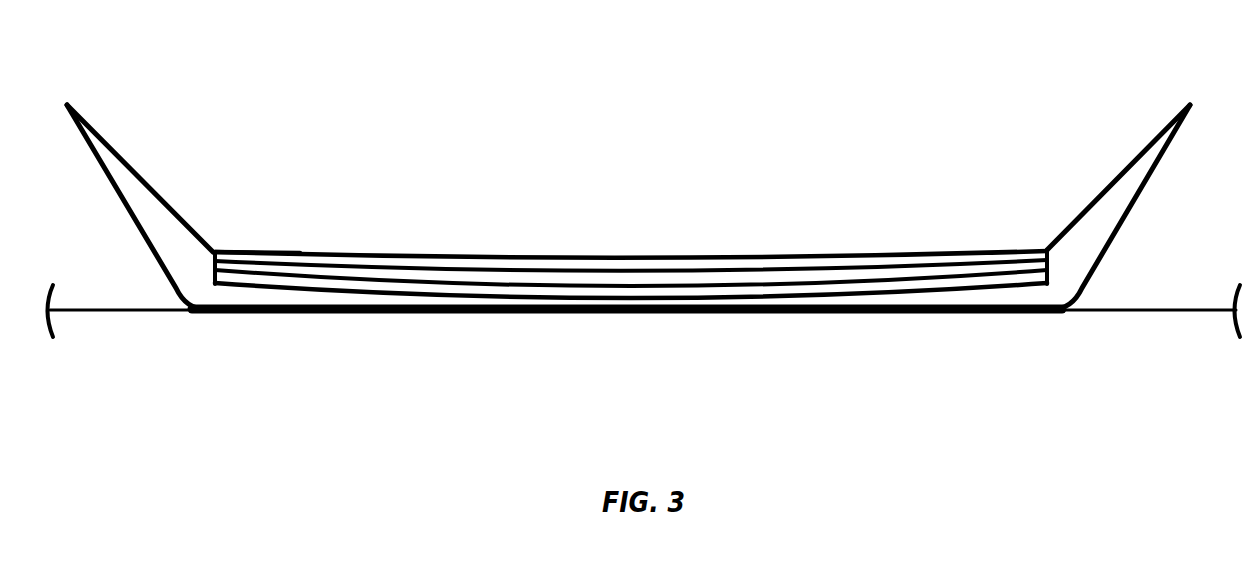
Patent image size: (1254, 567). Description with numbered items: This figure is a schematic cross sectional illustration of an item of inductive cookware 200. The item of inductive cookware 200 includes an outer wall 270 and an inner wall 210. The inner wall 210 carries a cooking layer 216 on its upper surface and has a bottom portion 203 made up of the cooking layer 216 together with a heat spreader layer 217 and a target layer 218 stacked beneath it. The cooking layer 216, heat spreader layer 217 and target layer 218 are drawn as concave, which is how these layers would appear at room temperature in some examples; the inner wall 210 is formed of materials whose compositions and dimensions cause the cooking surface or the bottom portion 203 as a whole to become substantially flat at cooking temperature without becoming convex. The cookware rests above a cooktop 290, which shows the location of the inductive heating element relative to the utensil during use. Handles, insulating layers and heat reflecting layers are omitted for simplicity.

The item of inductive cookware 200 is at (360, 142).
The bottom portion 203 is at (543, 254).
The inner wall 210 is at (1078, 212).
The cooking layer 216 is at (280, 251).
The heat spreader layer 217 is at (648, 266).
The target layer 218 is at (755, 284).
The outer wall 270 is at (1123, 222).
The cooktop 290 is at (688, 369).